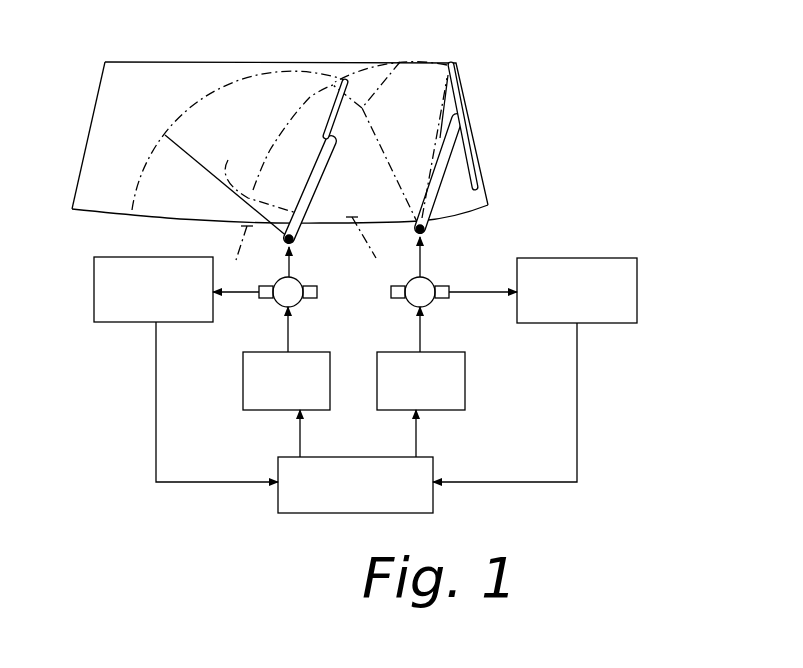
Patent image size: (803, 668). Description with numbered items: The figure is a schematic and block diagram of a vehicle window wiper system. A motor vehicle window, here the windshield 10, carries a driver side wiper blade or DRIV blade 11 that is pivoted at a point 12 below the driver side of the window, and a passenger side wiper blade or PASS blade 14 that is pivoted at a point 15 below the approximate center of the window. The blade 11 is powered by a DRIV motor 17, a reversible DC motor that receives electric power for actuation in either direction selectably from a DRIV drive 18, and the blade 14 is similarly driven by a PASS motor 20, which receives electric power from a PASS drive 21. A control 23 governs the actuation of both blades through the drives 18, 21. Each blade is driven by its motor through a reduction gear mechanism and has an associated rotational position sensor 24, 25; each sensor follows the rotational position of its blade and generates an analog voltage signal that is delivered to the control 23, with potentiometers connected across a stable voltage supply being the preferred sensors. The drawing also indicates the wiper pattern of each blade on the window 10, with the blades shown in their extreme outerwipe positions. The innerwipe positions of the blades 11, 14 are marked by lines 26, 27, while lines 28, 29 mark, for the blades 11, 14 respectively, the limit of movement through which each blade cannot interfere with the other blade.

The windshield 10 is at (162, 66).
The driver side wiper blade 11 is at (453, 95).
The pivot point 12 is at (430, 229).
The passenger side wiper blade 14 is at (325, 90).
The pivot point 15 is at (296, 237).
The DRIV motor 17 is at (424, 296).
The DRIV drive 18 is at (455, 395).
The PASS motor 20 is at (291, 297).
The PASS drive 21 is at (246, 406).
The control 23 is at (287, 507).
The rotational position sensor 24 is at (627, 310).
The rotational position sensor 25 is at (115, 312).
The innerwipe position line 26 is at (378, 243).
The innerwipe position line 27 is at (227, 205).
The non-interference limit line 28 is at (400, 62).
The non-interference limit line 29 is at (229, 158).